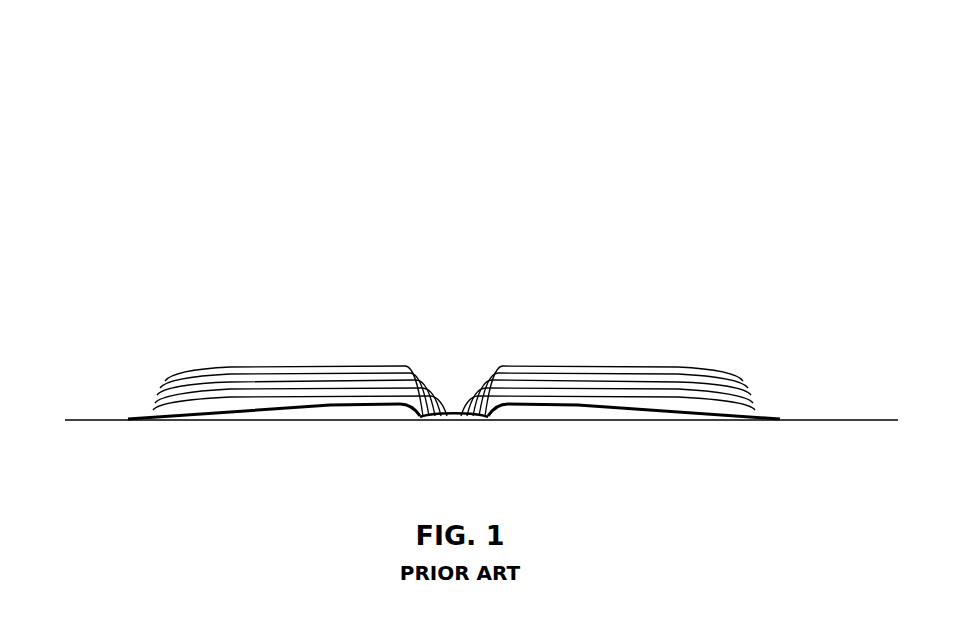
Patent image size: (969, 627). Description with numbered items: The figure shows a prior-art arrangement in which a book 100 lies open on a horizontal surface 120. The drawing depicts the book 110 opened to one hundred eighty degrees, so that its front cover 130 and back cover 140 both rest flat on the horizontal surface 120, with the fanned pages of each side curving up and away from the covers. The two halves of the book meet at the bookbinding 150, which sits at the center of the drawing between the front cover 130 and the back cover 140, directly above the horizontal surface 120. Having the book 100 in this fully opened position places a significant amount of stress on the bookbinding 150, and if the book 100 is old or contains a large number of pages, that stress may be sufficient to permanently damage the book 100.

The book 100 is at (218, 80).
The book 110 is at (455, 380).
The horizontal surface 120 is at (80, 419).
The front cover 130 is at (148, 418).
The back cover 140 is at (772, 418).
The bookbinding 150 is at (457, 417).